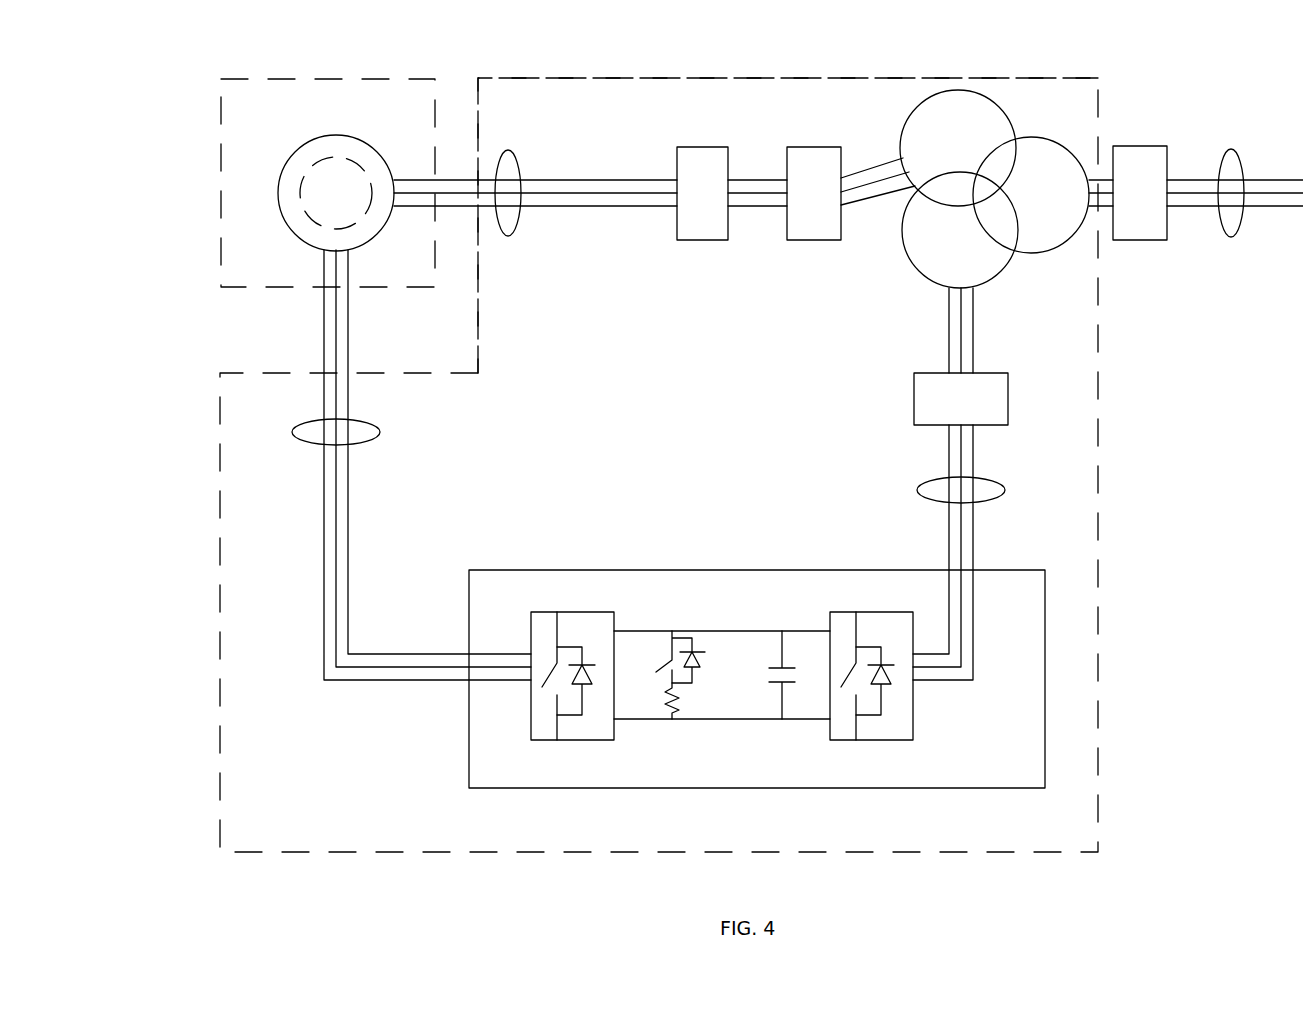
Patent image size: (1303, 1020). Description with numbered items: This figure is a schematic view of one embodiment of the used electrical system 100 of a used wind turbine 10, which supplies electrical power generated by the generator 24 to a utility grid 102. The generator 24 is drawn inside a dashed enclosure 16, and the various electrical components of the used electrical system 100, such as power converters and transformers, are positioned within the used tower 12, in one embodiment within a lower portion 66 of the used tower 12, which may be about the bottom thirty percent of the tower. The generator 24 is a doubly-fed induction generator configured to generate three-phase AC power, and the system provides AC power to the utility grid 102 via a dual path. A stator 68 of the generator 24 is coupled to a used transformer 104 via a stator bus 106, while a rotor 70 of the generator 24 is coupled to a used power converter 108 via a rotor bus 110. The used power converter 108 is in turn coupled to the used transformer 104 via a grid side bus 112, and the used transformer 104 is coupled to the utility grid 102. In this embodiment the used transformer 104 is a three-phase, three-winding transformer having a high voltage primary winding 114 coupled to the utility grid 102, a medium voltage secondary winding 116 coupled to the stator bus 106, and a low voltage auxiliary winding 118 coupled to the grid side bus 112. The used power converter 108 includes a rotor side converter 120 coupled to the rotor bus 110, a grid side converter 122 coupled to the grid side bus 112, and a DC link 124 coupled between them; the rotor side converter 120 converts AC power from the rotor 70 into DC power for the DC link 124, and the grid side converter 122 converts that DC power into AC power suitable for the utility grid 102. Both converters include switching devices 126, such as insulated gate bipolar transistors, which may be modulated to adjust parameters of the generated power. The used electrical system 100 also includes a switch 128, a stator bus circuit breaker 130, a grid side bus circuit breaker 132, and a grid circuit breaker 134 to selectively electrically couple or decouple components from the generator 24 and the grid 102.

The used wind turbine 10 is at (237, 70).
The used tower 12 is at (1100, 464).
The generator housing 16 is at (261, 113).
The generator 24 is at (337, 185).
The lower portion 66 is at (679, 418).
The stator 68 is at (374, 239).
The rotor 70 is at (299, 250).
The used electrical system 100 is at (576, 117).
The utility grid 102 is at (1232, 148).
The used transformer 104 is at (985, 216).
The stator bus 106 is at (511, 236).
The used power converter 108 is at (757, 652).
The rotor bus 110 is at (380, 432).
The grid side bus 112 is at (917, 490).
The primary winding 114 is at (1047, 252).
The secondary winding 116 is at (905, 130).
The auxiliary winding 118 is at (915, 266).
The rotor side converter 120 is at (572, 612).
The grid side converter 122 is at (871, 612).
The DC link 124 is at (722, 630).
The switching devices 126 is at (588, 721).
The switch 128 is at (700, 241).
The stator bus circuit breaker 130 is at (812, 241).
The grid side bus circuit breaker 132 is at (914, 398).
The grid circuit breaker 134 is at (1142, 146).